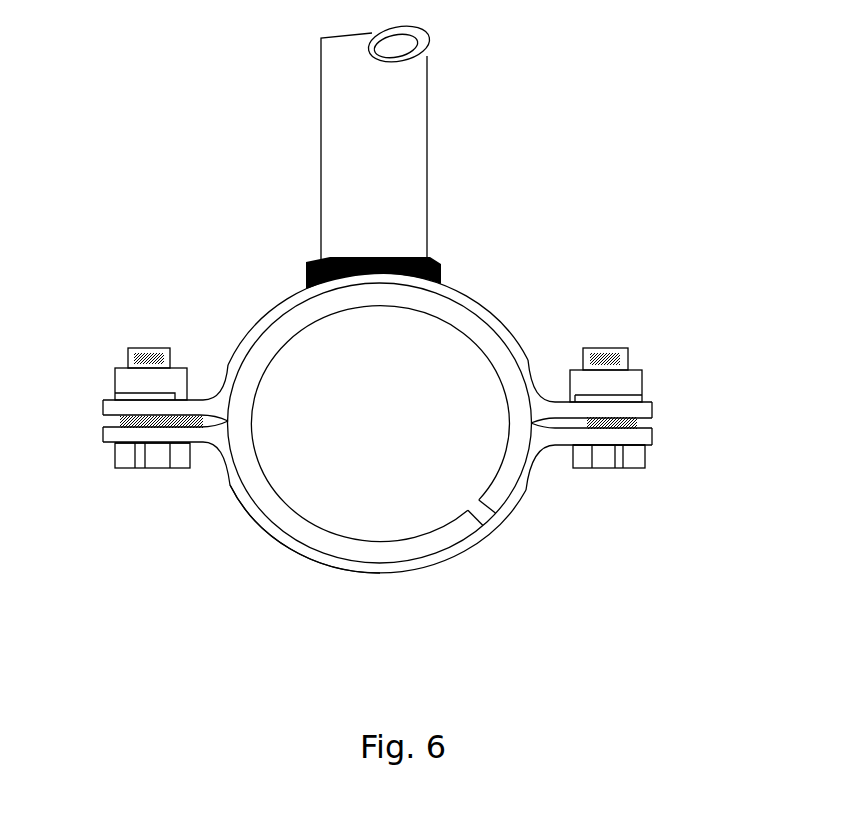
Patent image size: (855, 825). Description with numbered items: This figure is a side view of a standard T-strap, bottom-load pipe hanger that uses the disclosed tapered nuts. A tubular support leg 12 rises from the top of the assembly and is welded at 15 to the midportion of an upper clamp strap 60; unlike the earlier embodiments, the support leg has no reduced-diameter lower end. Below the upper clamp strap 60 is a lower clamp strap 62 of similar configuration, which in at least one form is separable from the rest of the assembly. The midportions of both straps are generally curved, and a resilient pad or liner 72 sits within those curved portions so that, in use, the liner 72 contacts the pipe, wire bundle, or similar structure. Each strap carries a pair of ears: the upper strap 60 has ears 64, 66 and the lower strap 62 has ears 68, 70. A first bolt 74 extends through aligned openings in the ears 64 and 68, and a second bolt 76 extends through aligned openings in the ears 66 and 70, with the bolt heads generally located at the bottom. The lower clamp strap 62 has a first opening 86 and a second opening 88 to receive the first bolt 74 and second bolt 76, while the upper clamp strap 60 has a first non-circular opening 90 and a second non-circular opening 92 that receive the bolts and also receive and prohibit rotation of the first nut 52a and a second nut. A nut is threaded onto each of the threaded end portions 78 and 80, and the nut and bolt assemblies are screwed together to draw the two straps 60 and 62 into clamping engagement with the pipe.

The support leg 12 is at (429, 100).
The weld 15 is at (437, 273).
The first nut 52a is at (185, 368).
The upper clamp strap 60 is at (503, 330).
The lower clamp strap 62 is at (509, 521).
The ear 64 is at (105, 403).
The ear 66 is at (653, 407).
The ear 68 is at (107, 440).
The ear 70 is at (653, 452).
The resilient pad or liner 72 is at (280, 524).
The first bolt 74 is at (150, 468).
The second bolt 76 is at (608, 468).
The threaded end portion 78 is at (128, 357).
The threaded end portion 80 is at (627, 352).
The first opening 86 is at (120, 468).
The second opening 88 is at (617, 468).
The first non-circular opening 90 is at (137, 398).
The second non-circular opening 92 is at (627, 398).